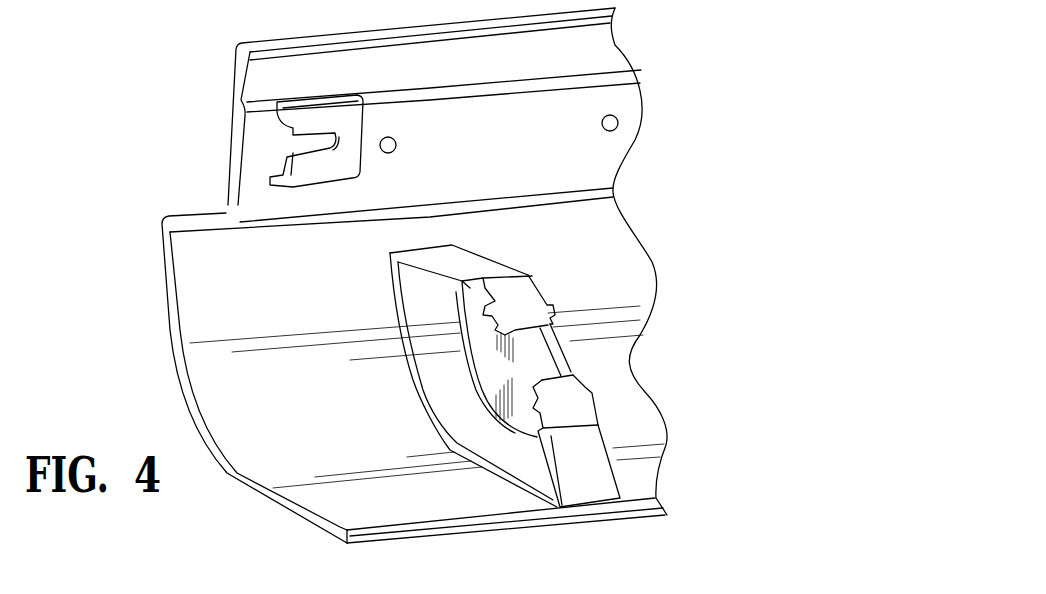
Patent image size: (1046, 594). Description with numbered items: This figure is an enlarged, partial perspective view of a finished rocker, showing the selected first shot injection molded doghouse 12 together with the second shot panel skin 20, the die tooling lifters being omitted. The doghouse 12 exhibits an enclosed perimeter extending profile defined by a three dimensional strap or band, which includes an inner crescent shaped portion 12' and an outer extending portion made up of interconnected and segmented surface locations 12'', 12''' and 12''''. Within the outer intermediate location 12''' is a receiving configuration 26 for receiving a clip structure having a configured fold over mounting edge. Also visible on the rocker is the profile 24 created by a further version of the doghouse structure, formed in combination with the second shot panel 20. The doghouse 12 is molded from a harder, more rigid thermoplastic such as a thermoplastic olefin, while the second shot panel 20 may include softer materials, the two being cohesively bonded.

The doghouse 12 is at (523, 403).
The inner crescent portion 12' is at (454, 380).
The segmented surface location 12'' is at (521, 277).
The outer intermediate location 12''' is at (568, 327).
The segmented surface location 12'''' is at (584, 441).
The second shot panel skin 20 is at (600, 243).
The profile 24 is at (293, 126).
The receiving configuration 26 is at (536, 358).